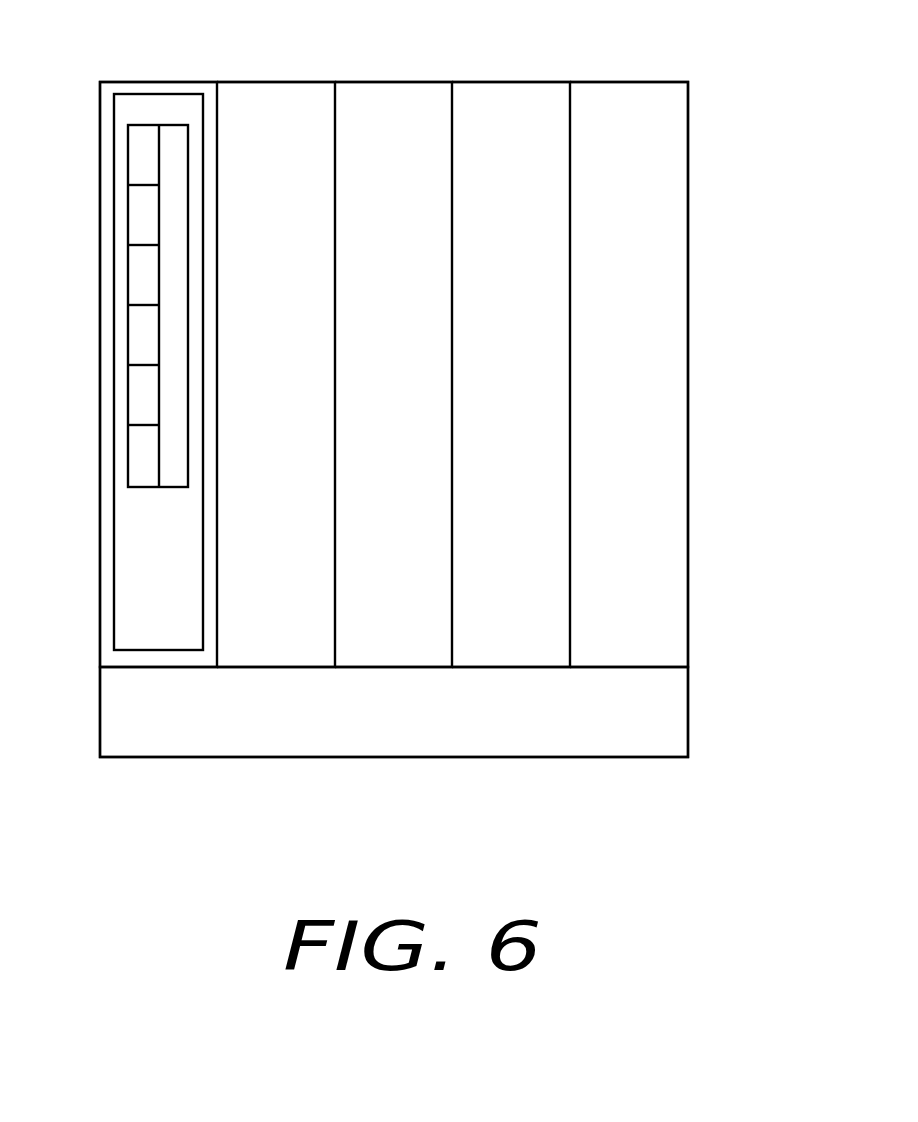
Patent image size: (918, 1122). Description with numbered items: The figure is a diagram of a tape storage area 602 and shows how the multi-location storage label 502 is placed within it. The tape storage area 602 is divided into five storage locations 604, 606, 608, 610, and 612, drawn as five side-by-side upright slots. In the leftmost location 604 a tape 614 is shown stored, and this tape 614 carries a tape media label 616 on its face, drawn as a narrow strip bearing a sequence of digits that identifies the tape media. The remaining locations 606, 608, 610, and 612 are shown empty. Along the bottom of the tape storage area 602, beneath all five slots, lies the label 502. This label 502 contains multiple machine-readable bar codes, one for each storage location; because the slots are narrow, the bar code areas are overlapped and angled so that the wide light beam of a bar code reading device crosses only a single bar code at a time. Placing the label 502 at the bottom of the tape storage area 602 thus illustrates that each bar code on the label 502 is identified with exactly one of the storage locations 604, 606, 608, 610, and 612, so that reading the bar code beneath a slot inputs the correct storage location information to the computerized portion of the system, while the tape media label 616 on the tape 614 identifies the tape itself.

The tape storage area 602 is at (688, 277).
The label 502 is at (688, 695).
The storage location 604 is at (156, 59).
The storage location 606 is at (275, 59).
The storage location 608 is at (391, 59).
The storage location 610 is at (508, 59).
The storage location 612 is at (626, 59).
The tape 614 is at (128, 575).
The tape media label 616 is at (128, 397).